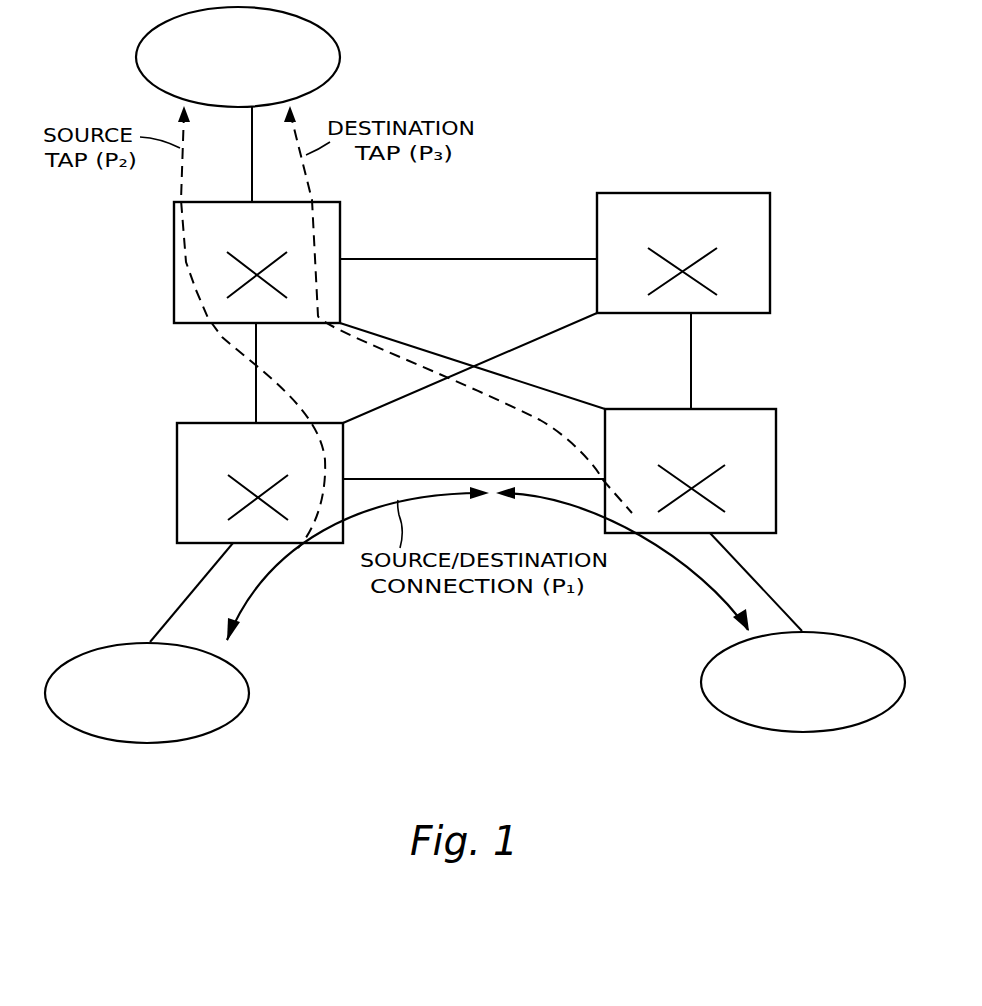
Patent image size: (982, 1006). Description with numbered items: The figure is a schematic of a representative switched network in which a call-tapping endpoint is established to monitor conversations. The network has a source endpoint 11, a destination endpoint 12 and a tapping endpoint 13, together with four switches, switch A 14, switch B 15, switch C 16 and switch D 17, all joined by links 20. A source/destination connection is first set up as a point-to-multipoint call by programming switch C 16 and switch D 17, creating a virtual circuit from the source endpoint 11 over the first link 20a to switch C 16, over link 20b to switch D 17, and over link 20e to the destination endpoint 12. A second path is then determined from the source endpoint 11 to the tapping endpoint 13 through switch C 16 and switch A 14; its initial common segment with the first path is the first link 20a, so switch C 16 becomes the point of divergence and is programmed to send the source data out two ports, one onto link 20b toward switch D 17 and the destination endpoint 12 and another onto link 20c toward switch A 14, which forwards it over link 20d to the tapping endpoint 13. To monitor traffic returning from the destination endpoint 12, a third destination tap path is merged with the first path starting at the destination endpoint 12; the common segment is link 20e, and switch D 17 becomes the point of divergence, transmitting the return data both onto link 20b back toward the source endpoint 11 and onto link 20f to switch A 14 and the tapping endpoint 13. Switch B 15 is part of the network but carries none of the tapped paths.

The source endpoint 11 is at (232, 722).
The destination endpoint 12 is at (722, 716).
The tapping endpoint 13 is at (320, 26).
The switch A 14 is at (341, 236).
The switch B 15 is at (770, 219).
The switch C 16 is at (344, 437).
The switch D 17 is at (777, 442).
The links 20 is at (580, 268).
The first link 20a is at (183, 605).
The link 20b is at (463, 479).
The link 20c is at (257, 345).
The link 20d is at (251, 162).
The link 20e is at (773, 598).
The link 20f is at (535, 384).